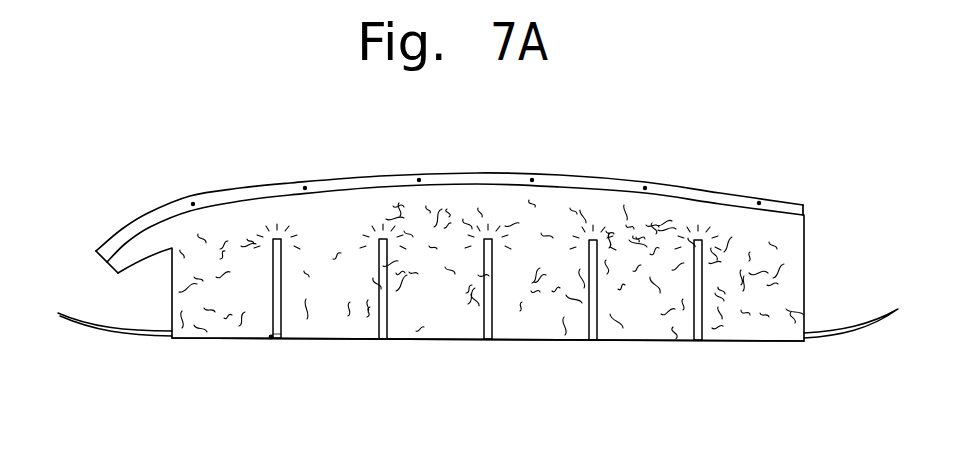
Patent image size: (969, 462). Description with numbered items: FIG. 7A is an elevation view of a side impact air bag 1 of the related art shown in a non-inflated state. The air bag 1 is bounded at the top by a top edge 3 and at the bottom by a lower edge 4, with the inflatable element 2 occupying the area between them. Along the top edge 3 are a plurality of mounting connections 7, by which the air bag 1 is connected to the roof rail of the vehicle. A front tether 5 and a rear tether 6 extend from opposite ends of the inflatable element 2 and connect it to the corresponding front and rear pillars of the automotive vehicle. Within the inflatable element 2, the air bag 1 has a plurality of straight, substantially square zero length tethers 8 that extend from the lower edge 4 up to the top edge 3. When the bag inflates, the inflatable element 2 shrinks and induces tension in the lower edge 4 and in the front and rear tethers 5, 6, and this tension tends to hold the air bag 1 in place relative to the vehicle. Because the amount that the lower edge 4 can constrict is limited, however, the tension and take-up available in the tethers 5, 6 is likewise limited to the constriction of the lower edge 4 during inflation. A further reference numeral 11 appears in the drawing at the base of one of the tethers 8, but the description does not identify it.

The side impact air bag 1 is at (131, 186).
The inflatable element 2 is at (172, 292).
The top edge 3 is at (369, 178).
The lower edge 4 is at (557, 343).
The front tether 5 is at (853, 333).
The rear tether 6 is at (110, 333).
The mounting connections 7 is at (419, 180).
The zero length tethers 8 is at (273, 272).
The pin base 11 is at (271, 338).